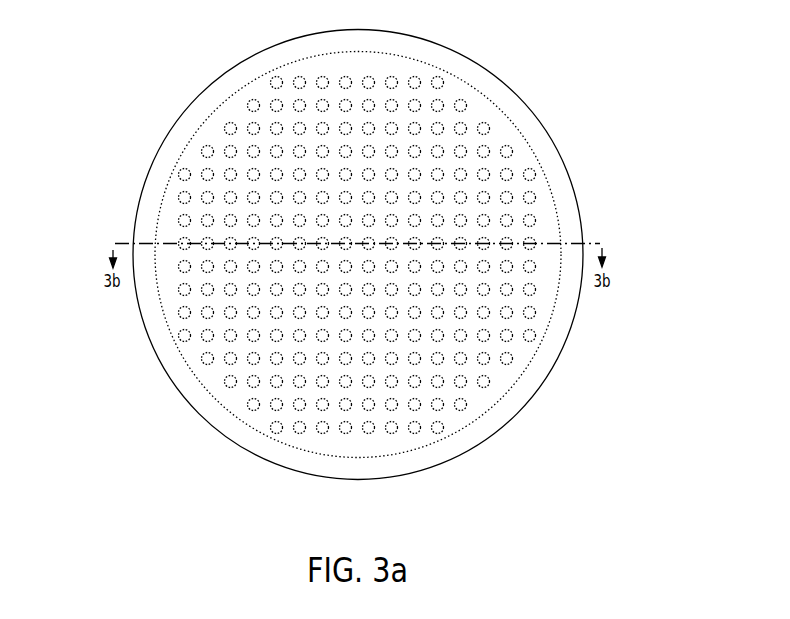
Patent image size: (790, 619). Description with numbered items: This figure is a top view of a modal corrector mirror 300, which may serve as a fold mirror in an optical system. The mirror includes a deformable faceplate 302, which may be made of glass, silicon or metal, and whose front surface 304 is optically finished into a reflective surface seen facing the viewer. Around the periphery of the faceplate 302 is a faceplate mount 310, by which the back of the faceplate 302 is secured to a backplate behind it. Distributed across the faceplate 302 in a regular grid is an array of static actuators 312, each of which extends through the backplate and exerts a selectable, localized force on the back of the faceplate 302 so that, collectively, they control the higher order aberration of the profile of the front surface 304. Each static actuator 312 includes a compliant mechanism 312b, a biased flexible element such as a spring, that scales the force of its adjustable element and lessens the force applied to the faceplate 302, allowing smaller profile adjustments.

The modal corrector mirror 300 is at (112, 54).
The deformable faceplate 302 is at (530, 94).
The front surface 304 is at (427, 52).
The faceplate mount 310 is at (228, 72).
The static actuators 312 is at (488, 399).
The compliant mechanism 312b is at (489, 383).